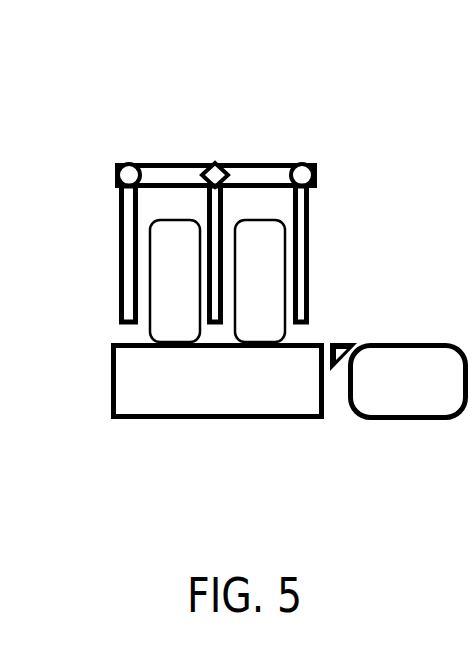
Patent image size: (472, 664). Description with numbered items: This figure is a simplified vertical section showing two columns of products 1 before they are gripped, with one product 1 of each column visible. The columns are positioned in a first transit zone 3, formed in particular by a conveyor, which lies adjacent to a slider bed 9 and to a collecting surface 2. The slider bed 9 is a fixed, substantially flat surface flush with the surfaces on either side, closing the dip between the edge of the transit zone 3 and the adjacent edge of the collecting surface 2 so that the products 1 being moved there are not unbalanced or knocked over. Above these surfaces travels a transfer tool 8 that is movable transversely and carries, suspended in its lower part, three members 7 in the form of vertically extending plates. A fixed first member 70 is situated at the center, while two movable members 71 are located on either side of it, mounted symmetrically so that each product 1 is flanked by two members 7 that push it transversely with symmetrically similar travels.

The product 1 is at (270, 293).
The collecting surface 2 is at (434, 427).
The first transit zone 3 is at (129, 425).
The member 7 is at (219, 201).
The transfer tool 8 is at (255, 154).
The slider bed 9 is at (340, 378).
The fixed first member 70 is at (215, 213).
The movable member 71 is at (122, 283).